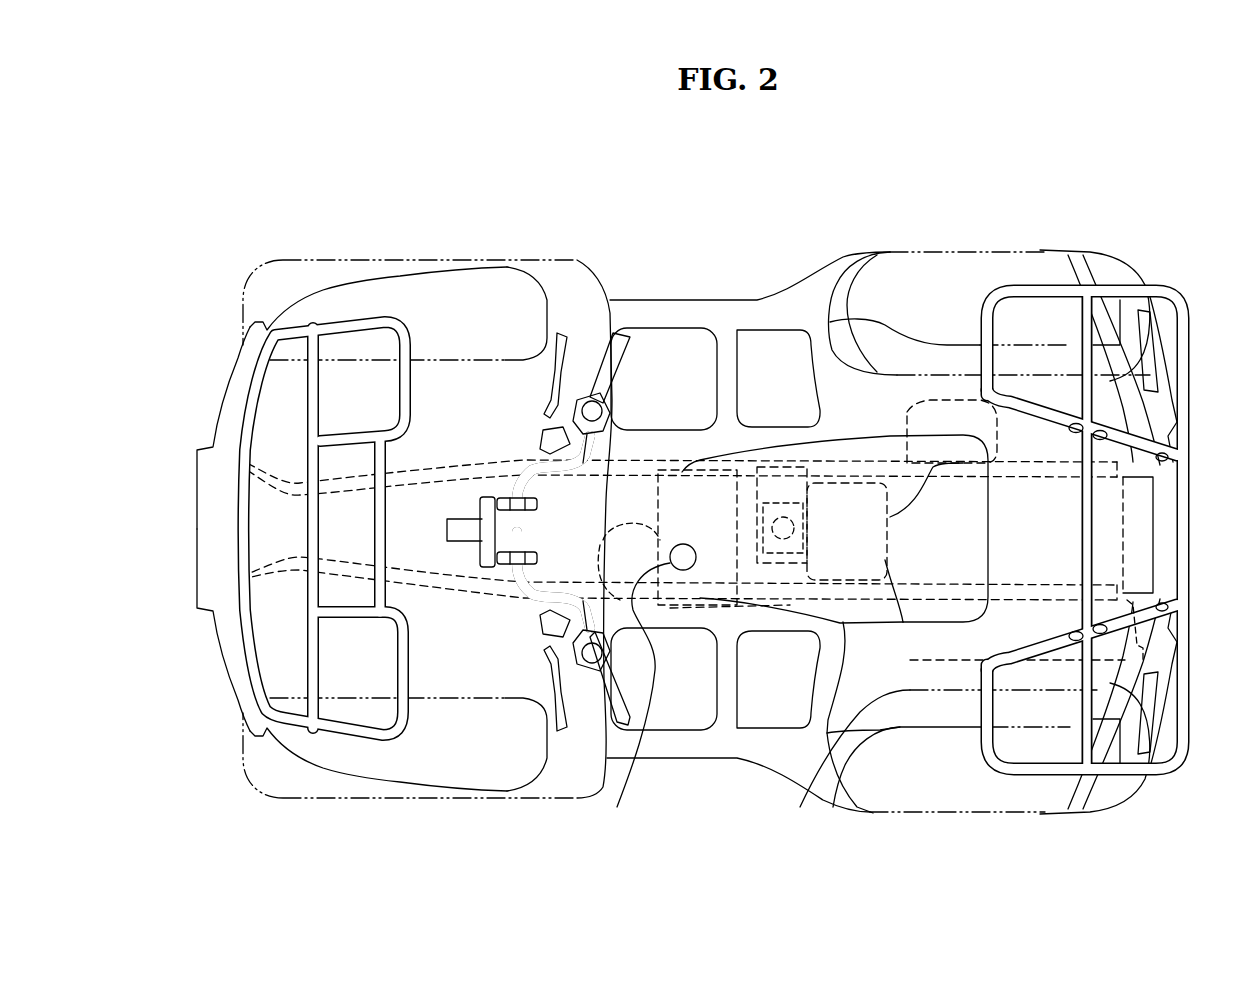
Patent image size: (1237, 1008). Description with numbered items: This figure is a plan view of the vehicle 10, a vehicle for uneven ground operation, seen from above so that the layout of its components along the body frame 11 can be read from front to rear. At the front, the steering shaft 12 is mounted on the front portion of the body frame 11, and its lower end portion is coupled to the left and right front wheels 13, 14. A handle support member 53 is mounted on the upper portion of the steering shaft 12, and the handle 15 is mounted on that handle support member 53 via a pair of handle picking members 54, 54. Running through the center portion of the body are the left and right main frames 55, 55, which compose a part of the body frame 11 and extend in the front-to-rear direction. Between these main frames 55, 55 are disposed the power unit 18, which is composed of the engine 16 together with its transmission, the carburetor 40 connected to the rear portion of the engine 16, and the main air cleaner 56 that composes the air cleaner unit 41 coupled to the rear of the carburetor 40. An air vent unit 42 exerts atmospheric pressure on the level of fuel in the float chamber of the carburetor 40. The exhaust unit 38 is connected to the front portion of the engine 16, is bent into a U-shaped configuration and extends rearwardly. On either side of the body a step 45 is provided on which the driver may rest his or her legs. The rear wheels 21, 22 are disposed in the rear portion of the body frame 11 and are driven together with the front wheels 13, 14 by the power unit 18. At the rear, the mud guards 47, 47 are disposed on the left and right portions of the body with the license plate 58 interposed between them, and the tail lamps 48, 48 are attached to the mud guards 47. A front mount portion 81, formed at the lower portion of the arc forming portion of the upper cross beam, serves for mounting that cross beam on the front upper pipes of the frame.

The vehicle 10 is at (252, 232).
The body frame 11 is at (290, 480).
The steering shaft 12 is at (390, 520).
The front wheel 13 is at (320, 805).
The front wheel 14 is at (336, 258).
The handle 15 is at (537, 600).
The engine 16 is at (722, 497).
The power unit 18 is at (660, 488).
The rear wheel 21 is at (828, 720).
The rear wheel 22 is at (859, 452).
The exhaust unit 38 is at (671, 606).
The carburetor 40 is at (785, 510).
The air cleaner unit 41 is at (862, 445).
The air vent unit 42 is at (617, 807).
The step 45 is at (687, 372).
The mud guard 47 is at (1120, 254).
The tail lamp 48 is at (1155, 302).
The handle support member 53 is at (465, 550).
The handle picking member 54 is at (537, 504).
The main frame 55 is at (447, 465).
The main air cleaner 56 is at (903, 622).
The license plate 58 is at (1160, 540).
The front mount portion 81 is at (650, 540).